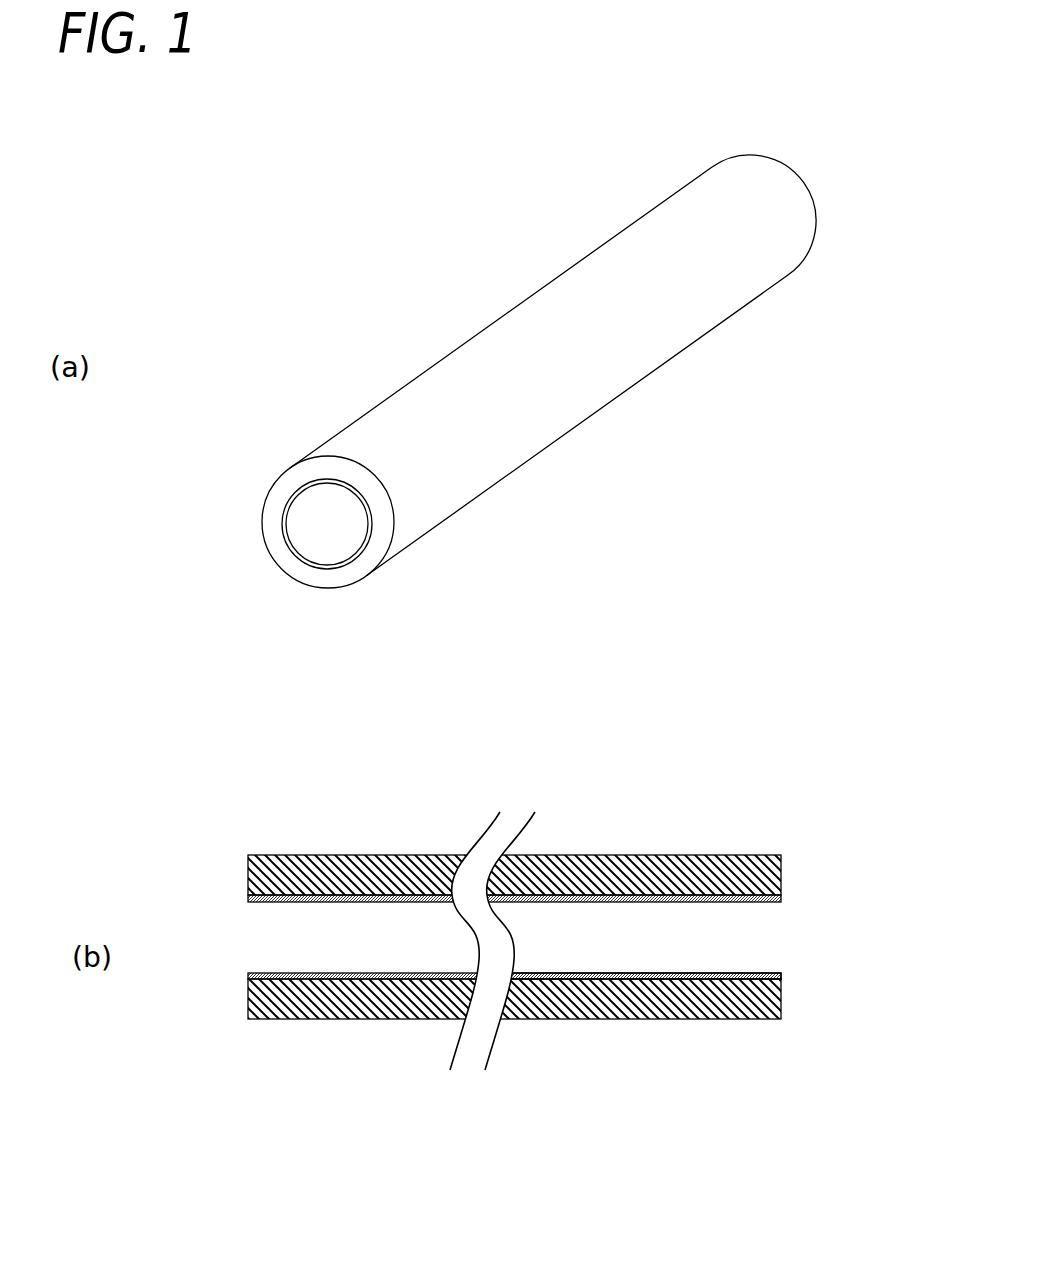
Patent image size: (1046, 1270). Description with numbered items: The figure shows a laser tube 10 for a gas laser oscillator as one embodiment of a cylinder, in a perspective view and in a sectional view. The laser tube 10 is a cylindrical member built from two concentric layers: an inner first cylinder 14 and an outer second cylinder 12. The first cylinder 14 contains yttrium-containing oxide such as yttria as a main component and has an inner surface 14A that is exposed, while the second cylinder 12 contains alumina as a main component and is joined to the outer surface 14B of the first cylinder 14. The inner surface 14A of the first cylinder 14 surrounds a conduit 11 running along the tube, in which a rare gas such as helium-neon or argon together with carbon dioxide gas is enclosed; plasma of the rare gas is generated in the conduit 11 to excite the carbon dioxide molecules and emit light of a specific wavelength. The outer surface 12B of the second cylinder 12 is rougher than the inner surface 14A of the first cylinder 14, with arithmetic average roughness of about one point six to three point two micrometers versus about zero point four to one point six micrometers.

The laser tube 10 is at (489, 638).
The conduit 11 is at (334, 543).
The second cylinder 12 is at (591, 380).
The outer surface of the second cylinder 12B is at (540, 1019).
The first cylinder 14 is at (283, 520).
The inner surface of the first cylinder 14A is at (592, 962).
The outer surface of the first cylinder 14B is at (745, 980).